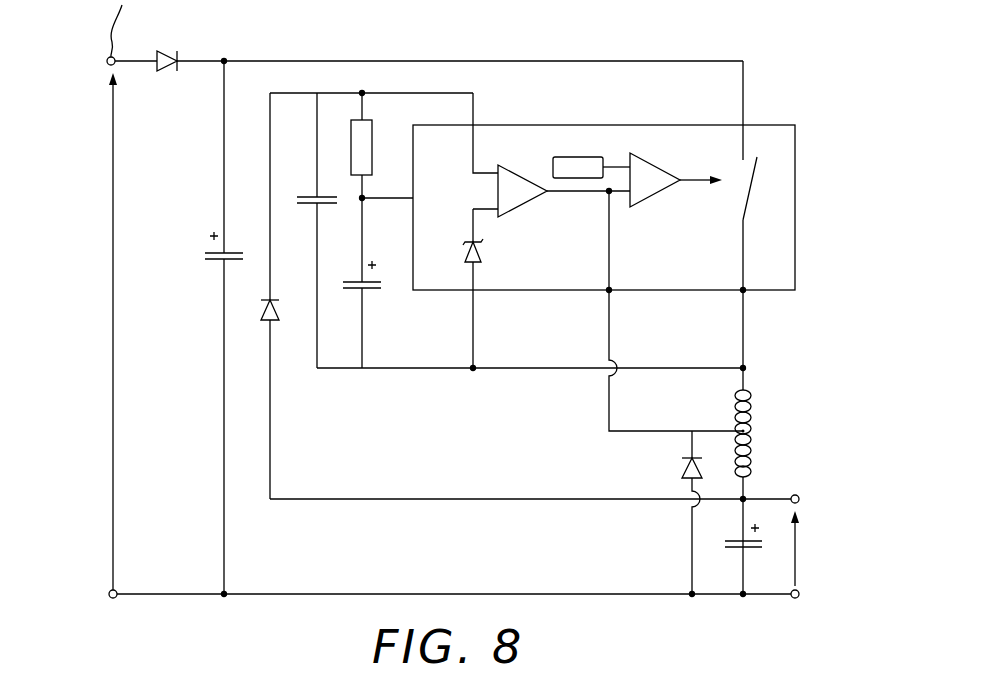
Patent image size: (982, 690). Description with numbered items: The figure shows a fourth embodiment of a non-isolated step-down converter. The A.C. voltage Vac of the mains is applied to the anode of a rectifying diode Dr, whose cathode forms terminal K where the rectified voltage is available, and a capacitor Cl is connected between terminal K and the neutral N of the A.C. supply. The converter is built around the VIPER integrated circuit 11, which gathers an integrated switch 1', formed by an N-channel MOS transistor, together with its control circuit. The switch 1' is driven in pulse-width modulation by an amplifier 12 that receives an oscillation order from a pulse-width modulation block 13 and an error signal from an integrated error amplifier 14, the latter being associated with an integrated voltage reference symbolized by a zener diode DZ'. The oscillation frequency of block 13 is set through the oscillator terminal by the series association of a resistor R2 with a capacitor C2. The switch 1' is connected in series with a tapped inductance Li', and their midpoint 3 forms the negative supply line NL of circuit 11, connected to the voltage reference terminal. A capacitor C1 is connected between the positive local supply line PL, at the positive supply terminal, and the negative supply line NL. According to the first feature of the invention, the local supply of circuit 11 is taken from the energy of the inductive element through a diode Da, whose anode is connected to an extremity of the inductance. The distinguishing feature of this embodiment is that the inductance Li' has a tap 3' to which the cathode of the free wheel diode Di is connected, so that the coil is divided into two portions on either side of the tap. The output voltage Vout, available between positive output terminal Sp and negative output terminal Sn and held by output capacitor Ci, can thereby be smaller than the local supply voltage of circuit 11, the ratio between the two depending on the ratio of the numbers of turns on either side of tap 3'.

The VIPER component 11 is at (772, 123).
The amplifier 12 is at (660, 187).
The PWM block 13 is at (582, 157).
The integrated error amplifier 14 is at (527, 195).
The integrated switch 1' is at (788, 214).
The midpoint 3 is at (759, 350).
The tap 3' is at (720, 405).
The terminal K is at (225, 54).
The positive local supply line PL is at (393, 93).
The negative supply line NL is at (523, 370).
The neutral N is at (108, 590).
The rectifying diode Dr is at (165, 47).
The diode Da is at (256, 323).
The free wheel diode Di is at (681, 471).
The capacitor Cl is at (220, 257).
The capacitor C1 is at (311, 187).
The capacitor C2 is at (373, 291).
The resistor R2 is at (376, 147).
The output capacitor Ci is at (747, 550).
The inductance Li' is at (768, 428).
The zener diode DZ' is at (494, 249).
The A.C. voltage Vac is at (133, 331).
The output voltage Vout is at (819, 548).
The positive output terminal Sp is at (799, 496).
The negative output terminal Sn is at (797, 598).